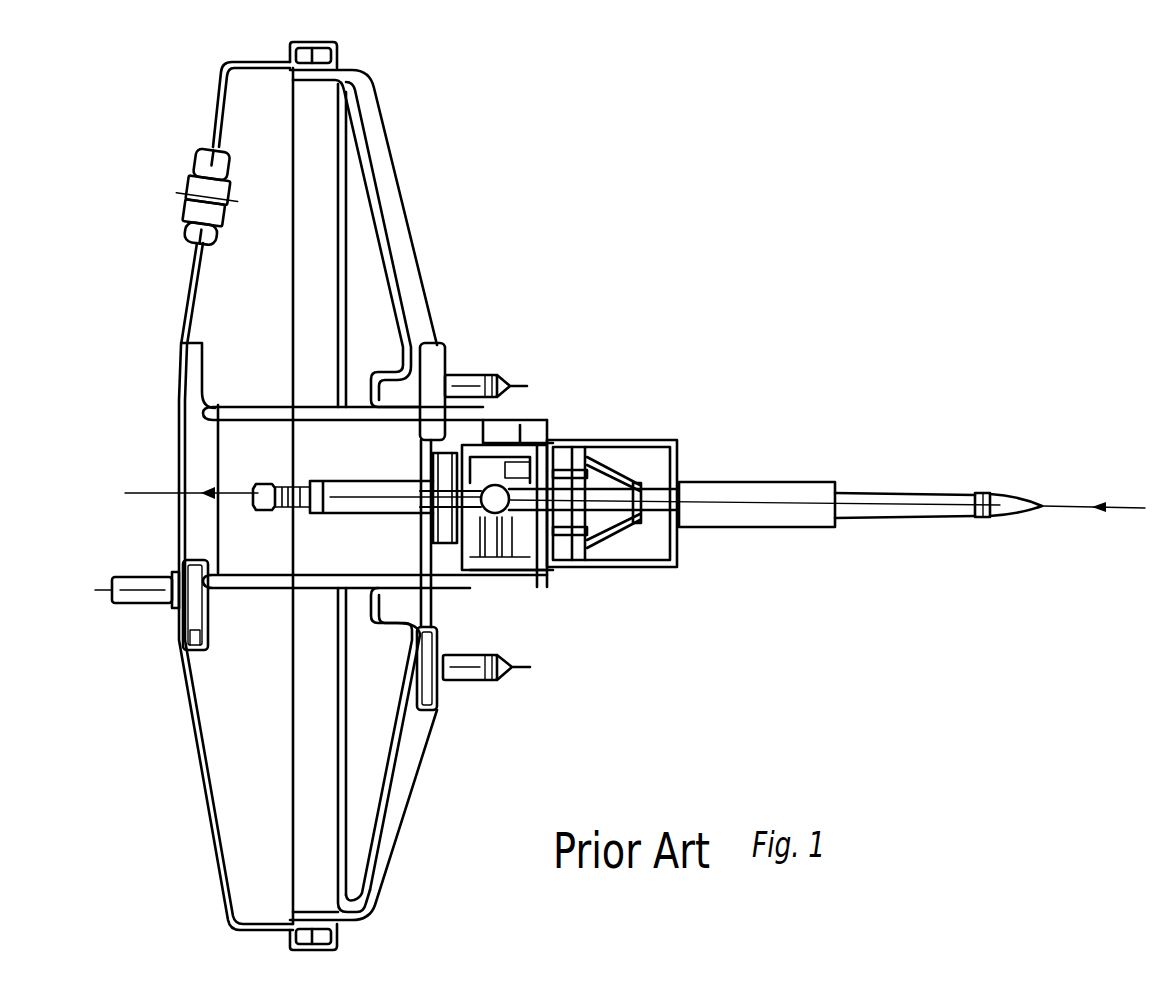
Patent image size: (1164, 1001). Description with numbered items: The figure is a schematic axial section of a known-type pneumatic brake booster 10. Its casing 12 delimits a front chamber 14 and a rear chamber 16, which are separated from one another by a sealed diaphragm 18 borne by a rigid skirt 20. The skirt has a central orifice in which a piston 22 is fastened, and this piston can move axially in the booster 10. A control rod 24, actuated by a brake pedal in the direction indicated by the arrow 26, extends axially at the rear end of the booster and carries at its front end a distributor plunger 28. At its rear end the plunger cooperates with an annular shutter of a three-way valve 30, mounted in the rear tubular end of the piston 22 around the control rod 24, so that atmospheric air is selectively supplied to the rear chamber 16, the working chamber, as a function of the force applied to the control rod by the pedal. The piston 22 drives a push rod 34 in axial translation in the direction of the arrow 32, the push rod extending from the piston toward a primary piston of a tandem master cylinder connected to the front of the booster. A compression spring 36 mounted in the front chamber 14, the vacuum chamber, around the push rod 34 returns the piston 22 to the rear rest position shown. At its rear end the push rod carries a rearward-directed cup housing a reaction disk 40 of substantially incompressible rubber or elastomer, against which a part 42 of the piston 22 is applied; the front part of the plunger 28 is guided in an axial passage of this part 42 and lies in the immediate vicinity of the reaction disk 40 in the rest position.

The pneumatic brake booster 10 is at (433, 223).
The casing 12 is at (217, 76).
The front chamber 14 is at (363, 496).
The rear chamber 16 is at (393, 167).
The sealed diaphragm 18 is at (372, 128).
The rigid skirt 20 is at (400, 289).
The piston 22 is at (382, 640).
The control rod 24 is at (903, 492).
The arrow 26 is at (1105, 507).
The distributor plunger 28 is at (456, 582).
The three-way valve 30 is at (570, 440).
The arrow 32 is at (240, 466).
The push rod 34 is at (347, 475).
The compression spring 36 is at (271, 592).
The reaction disk 40 is at (460, 373).
The part of the booster piston 42 is at (487, 372).